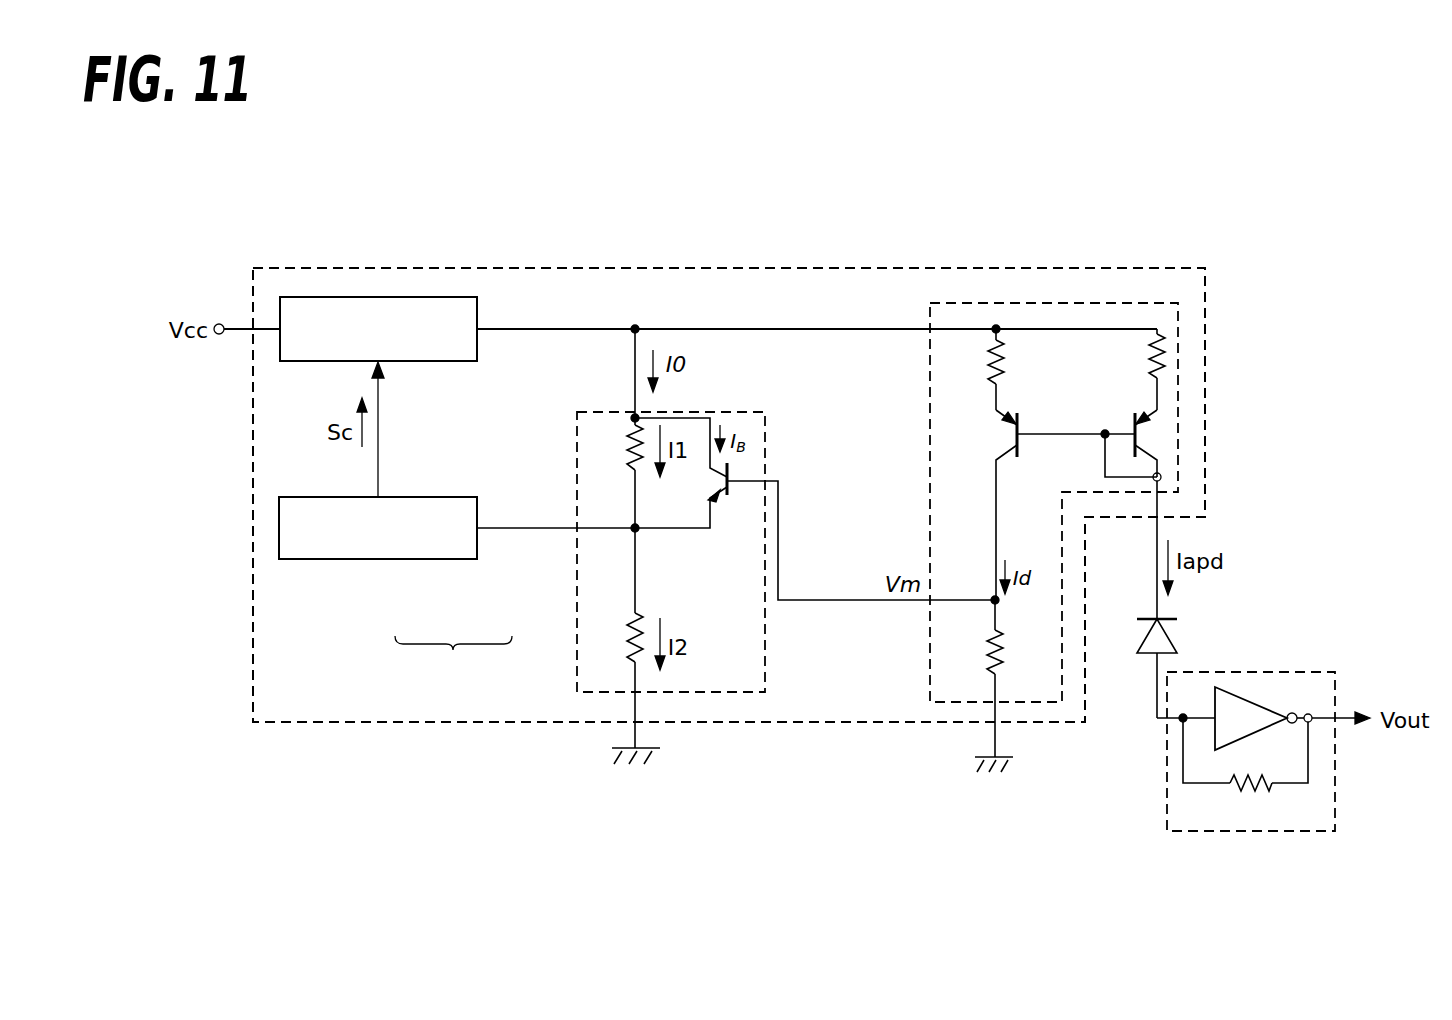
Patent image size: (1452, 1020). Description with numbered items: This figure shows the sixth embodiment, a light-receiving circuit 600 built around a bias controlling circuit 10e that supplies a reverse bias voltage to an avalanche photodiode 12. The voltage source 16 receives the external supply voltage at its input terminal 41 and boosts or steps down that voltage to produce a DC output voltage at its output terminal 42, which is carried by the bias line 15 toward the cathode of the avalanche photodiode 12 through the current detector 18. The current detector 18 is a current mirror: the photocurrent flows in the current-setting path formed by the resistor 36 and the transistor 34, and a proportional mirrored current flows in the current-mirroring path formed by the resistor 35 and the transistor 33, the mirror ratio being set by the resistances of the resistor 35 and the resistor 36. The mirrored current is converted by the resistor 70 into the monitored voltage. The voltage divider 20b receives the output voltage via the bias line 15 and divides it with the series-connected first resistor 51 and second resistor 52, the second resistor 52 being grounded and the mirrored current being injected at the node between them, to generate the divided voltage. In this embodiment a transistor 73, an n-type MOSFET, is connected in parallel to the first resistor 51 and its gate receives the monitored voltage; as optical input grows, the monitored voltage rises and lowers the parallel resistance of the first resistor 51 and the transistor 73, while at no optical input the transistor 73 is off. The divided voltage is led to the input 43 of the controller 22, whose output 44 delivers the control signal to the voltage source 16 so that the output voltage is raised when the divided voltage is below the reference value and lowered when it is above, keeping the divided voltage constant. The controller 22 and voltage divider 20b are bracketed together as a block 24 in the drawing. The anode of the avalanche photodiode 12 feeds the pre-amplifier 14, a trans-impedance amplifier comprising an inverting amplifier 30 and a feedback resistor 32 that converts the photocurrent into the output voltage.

The light-receiving circuit 600 is at (1292, 253).
The bias controlling circuit 10e is at (1066, 266).
The input terminal 41 is at (219, 323).
The voltage source 16 is at (380, 297).
The output terminal 42 is at (480, 334).
The bias line 15 is at (808, 327).
The output 44 is at (380, 495).
The controller 22 is at (408, 560).
The input 43 is at (482, 526).
The bias control unit 24 is at (453, 660).
The voltage divider 20b is at (577, 586).
The first resistor 51 is at (626, 456).
The second resistor 52 is at (656, 614).
The transistor 73 is at (736, 470).
The current detector 18 is at (1180, 378).
The resistor 35 is at (988, 345).
The resistor 36 is at (1166, 352).
The transistor 33 is at (1020, 446).
The transistor 34 is at (1130, 418).
The resistor 70 is at (1000, 634).
The avalanche photodiode 12 is at (1165, 640).
The pre-amplifier 14 is at (1335, 790).
The inverting amplifier 30 is at (1240, 712).
The feedback resistor 32 is at (1240, 790).